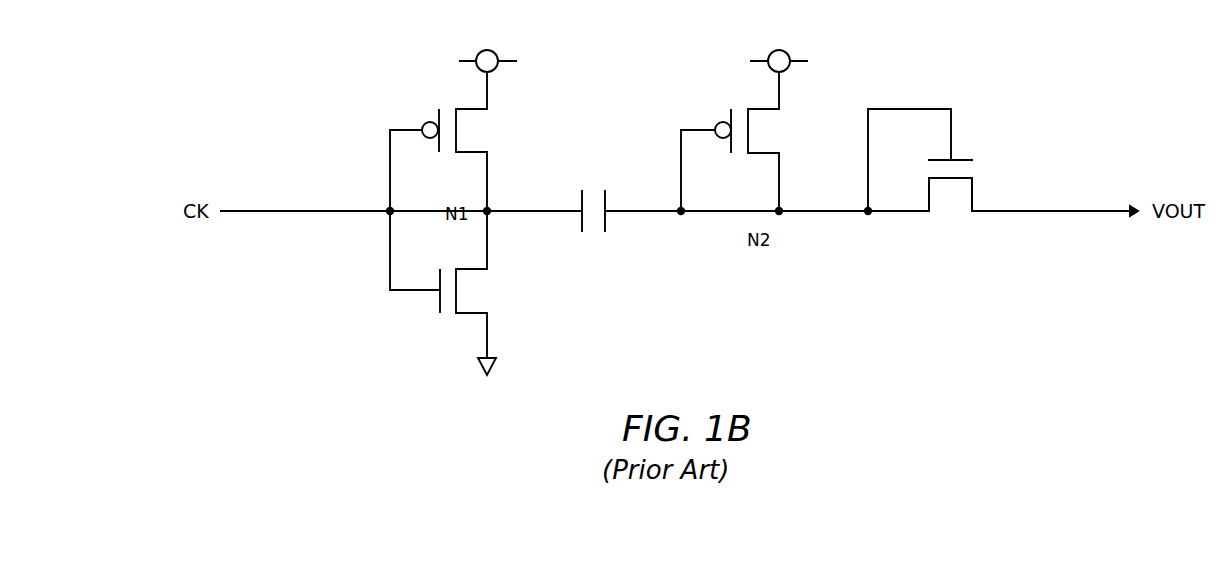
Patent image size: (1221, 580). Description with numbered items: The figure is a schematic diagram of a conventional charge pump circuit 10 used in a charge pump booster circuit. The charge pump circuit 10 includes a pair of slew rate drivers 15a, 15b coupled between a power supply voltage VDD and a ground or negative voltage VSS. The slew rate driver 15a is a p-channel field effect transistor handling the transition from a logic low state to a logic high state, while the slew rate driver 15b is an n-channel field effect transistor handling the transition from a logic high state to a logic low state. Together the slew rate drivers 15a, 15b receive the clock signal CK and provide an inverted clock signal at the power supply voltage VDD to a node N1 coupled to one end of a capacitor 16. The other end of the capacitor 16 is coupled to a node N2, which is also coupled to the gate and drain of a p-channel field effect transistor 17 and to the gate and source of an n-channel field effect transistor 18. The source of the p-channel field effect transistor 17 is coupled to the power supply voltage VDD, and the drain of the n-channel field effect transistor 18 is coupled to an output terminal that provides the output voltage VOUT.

The charge pump circuit 10 is at (1100, 50).
The slew rate driver 15a is at (448, 105).
The slew rate driver 15b is at (447, 316).
The capacitor 16 is at (592, 185).
The p-channel field effect transistor 17 is at (740, 115).
The n-channel field effect transistor 18 is at (963, 158).